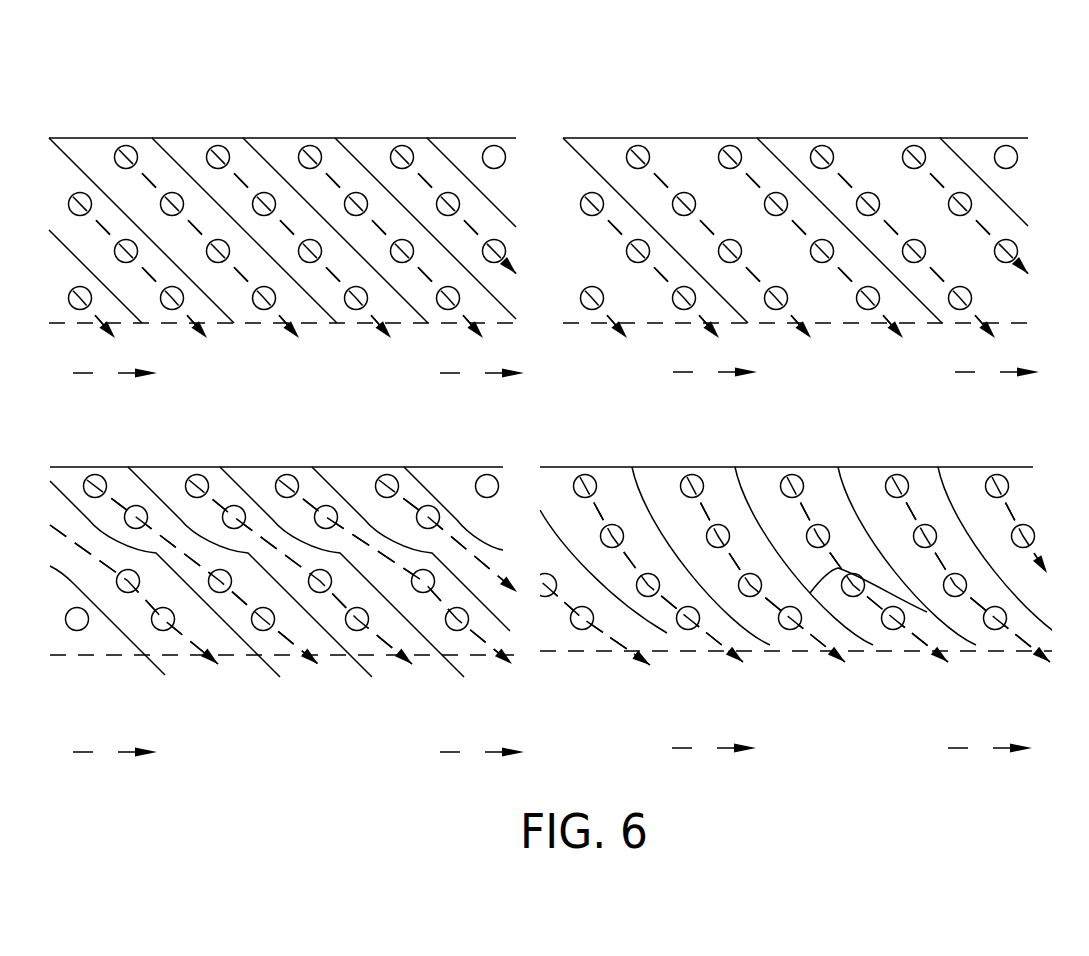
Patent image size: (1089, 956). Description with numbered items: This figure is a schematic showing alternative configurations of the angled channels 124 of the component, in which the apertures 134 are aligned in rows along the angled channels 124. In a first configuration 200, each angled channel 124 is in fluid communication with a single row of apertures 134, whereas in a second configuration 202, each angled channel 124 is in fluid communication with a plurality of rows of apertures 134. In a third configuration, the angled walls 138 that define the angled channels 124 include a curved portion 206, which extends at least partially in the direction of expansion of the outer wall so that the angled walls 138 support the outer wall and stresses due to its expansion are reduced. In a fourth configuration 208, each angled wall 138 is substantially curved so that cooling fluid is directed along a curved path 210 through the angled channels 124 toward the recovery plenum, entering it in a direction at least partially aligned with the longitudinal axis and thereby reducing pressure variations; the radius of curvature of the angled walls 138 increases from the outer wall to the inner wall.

The first configuration 200 is at (273, 118).
The second configuration 202 is at (822, 118).
The curved portion 206 is at (240, 552).
The fourth configuration 208 is at (873, 452).
The angled channel 124 is at (133, 315).
The aperture 134 is at (637, 263).
The angled wall 138 is at (720, 293).
The curved path 210 is at (810, 593).